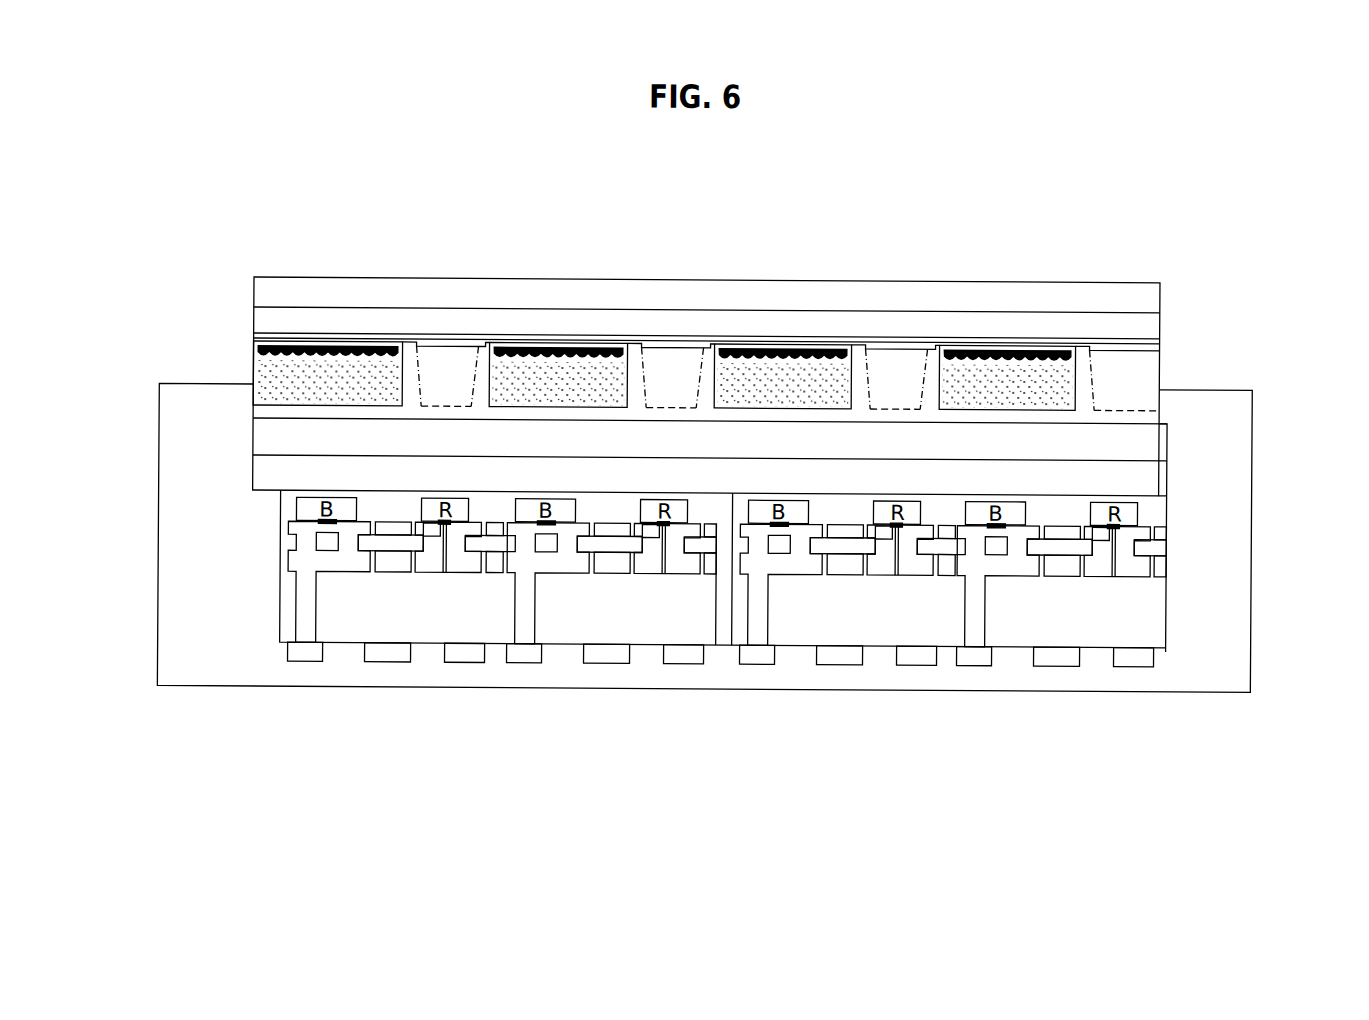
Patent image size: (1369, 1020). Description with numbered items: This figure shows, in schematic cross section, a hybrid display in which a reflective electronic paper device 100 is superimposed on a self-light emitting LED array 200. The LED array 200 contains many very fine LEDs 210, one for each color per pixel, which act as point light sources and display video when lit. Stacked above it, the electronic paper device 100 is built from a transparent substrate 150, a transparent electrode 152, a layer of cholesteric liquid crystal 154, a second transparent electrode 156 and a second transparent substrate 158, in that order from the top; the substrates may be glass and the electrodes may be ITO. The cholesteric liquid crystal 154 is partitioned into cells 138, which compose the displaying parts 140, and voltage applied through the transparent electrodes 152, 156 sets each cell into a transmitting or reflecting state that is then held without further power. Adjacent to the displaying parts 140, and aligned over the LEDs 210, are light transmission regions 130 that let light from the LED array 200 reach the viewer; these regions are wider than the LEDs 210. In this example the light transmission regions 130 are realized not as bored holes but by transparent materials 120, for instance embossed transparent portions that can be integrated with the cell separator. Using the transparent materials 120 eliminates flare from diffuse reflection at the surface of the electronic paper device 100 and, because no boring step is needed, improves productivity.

The electronic paper device 100 is at (244, 497).
The transparent materials 120 is at (443, 377).
The light transmission regions 130 is at (462, 330).
The cells 138 is at (397, 360).
The displaying parts 140 is at (305, 330).
The transparent substrate 150 is at (1152, 289).
The transparent electrode 152 is at (1152, 324).
The cholesteric liquid crystal 154 is at (333, 377).
The transparent electrode 156 is at (1152, 439).
The transparent substrate 158 is at (1152, 472).
The LED array 200 is at (243, 477).
The LEDs 210 is at (347, 518).